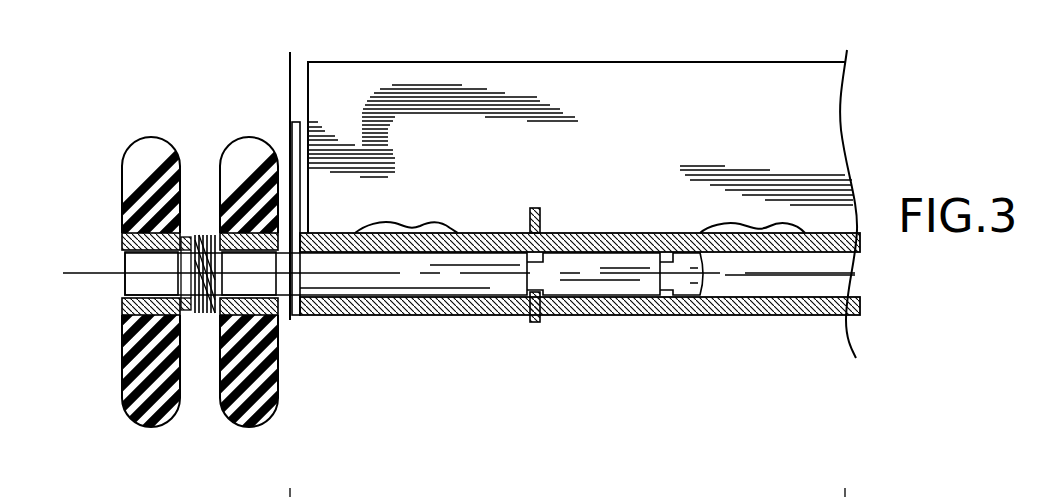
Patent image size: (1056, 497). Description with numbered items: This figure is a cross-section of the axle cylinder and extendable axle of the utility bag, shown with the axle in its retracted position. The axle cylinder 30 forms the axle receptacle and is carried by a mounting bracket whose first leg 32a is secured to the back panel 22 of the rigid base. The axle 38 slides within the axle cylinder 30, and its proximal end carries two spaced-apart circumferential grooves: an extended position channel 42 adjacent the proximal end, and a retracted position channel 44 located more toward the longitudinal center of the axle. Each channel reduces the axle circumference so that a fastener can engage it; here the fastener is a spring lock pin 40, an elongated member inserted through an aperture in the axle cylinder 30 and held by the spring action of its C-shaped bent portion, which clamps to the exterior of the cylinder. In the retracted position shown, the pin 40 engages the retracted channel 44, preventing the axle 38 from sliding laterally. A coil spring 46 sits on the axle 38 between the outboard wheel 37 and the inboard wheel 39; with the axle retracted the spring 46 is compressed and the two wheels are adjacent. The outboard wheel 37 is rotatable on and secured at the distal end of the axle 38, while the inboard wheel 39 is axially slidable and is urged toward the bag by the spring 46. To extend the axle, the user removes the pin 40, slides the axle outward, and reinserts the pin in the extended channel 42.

The back panel 22 is at (290, 60).
The first leg 32a is at (333, 100).
The axle cylinder 30 is at (400, 316).
The axle 38 is at (352, 290).
The retracted position channel 44 is at (540, 268).
The extended position channel 42 is at (665, 270).
The spring lock pin 40 is at (530, 320).
The outboard wheel 37 is at (148, 425).
The inboard wheel 39 is at (262, 425).
The coil spring 46 is at (203, 316).